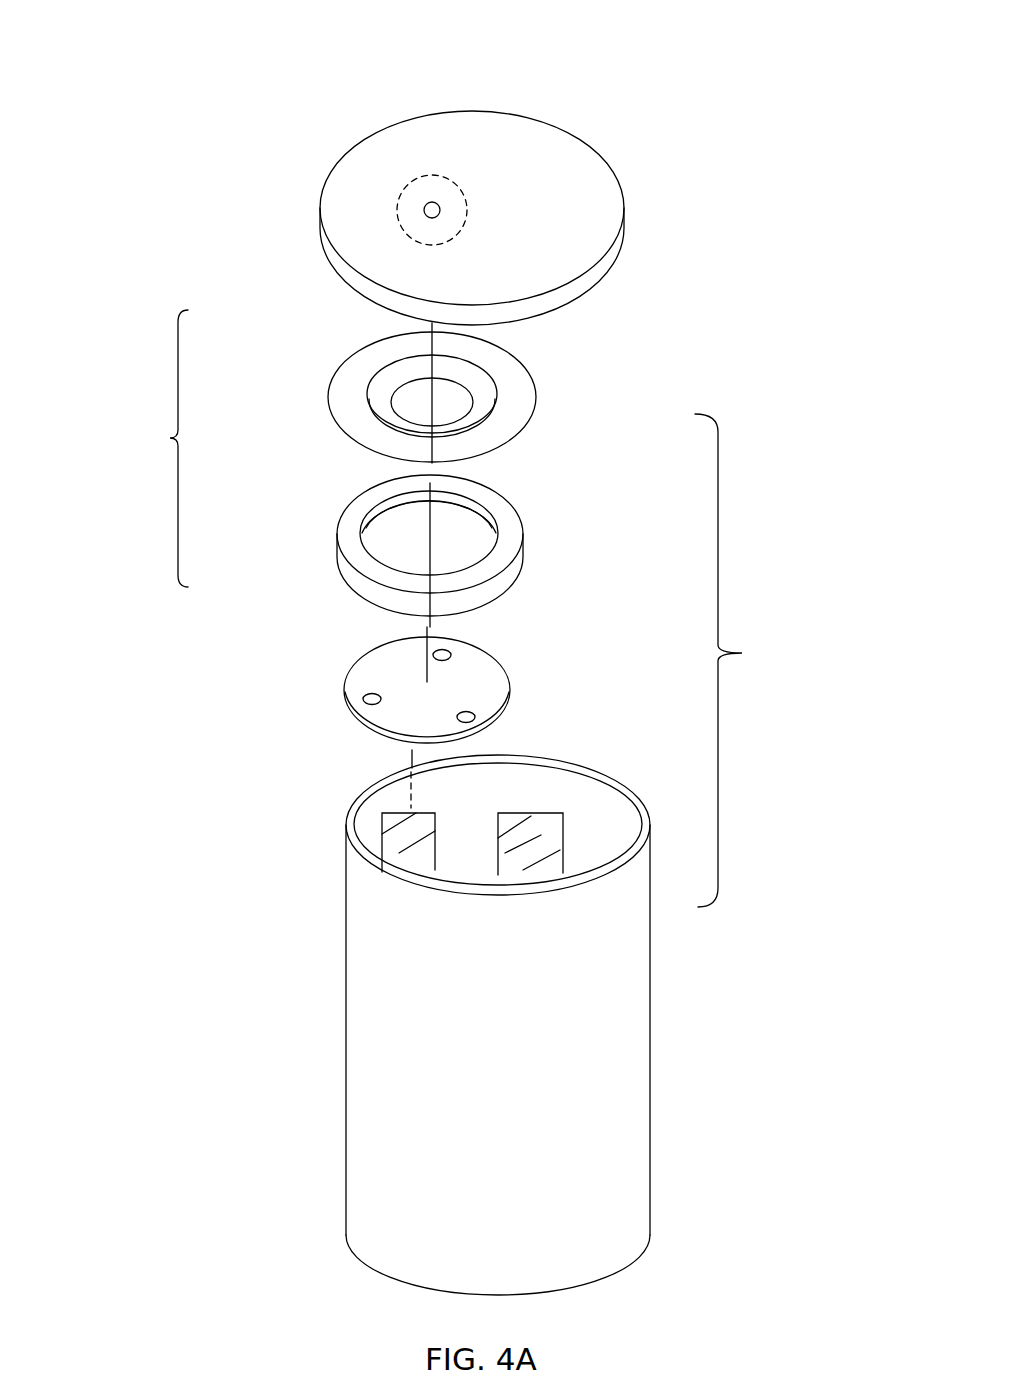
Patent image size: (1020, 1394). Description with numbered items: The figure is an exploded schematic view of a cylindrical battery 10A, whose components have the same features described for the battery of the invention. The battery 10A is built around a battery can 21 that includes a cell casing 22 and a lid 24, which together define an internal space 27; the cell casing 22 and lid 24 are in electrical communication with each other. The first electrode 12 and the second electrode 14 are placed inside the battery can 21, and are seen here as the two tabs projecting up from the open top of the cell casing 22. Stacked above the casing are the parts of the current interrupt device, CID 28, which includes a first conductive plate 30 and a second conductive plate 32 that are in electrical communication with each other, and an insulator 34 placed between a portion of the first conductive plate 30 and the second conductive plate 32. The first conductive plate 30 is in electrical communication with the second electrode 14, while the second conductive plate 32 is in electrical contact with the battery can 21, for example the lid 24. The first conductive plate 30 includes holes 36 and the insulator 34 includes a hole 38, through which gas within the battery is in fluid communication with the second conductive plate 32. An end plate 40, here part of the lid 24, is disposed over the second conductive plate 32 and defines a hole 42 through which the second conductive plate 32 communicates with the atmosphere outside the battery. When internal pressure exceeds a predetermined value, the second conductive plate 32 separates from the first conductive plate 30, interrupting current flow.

The cylindrical battery 10A is at (171, 145).
The end plate 40 is at (435, 175).
The hole 42 is at (425, 208).
The lid 24 is at (592, 290).
The CID 28 is at (156, 448).
The second conductive plate 32 is at (341, 350).
The insulator 34 is at (423, 536).
The hole 38 is at (481, 548).
The first conductive plate 30 is at (417, 675).
The holes 36 is at (472, 716).
The battery can 21 is at (742, 660).
The internal space 27 is at (533, 775).
The first electrode 12 is at (553, 840).
The second electrode 14 is at (397, 840).
The cell casing 22 is at (481, 1010).